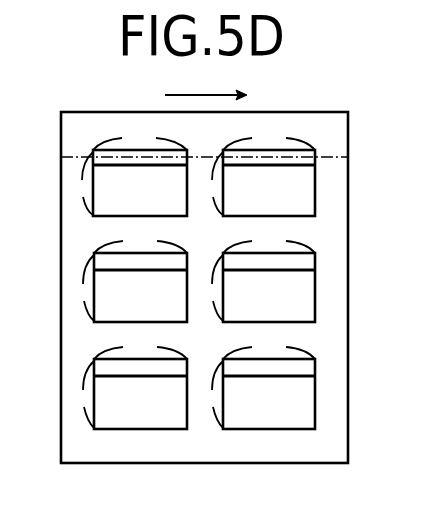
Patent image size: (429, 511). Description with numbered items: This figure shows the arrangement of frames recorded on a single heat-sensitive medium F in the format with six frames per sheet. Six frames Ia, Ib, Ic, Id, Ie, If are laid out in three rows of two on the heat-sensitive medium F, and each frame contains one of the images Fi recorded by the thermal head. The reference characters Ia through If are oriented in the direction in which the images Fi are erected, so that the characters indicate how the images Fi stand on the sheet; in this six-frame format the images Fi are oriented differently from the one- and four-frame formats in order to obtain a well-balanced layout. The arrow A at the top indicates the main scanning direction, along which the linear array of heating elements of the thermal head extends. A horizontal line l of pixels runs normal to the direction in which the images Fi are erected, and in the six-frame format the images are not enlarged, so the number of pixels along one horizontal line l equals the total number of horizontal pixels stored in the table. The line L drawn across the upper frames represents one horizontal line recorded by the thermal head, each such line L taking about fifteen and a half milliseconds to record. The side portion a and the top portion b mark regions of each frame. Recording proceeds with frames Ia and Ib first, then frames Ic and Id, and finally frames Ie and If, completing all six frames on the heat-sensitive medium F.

The heat-sensitive medium F is at (104, 464).
The images Fi is at (108, 212).
The frame Ia is at (140, 183).
The frame Ib is at (269, 183).
The frame Ic is at (140, 287).
The frame Id is at (269, 287).
The frame Ie is at (140, 394).
The frame If is at (269, 394).
The side portion a is at (145, 290).
The top portion b is at (204, 241).
The horizontal line l is at (157, 168).
The horizontal line L is at (338, 157).
The main scanning direction A is at (215, 87).